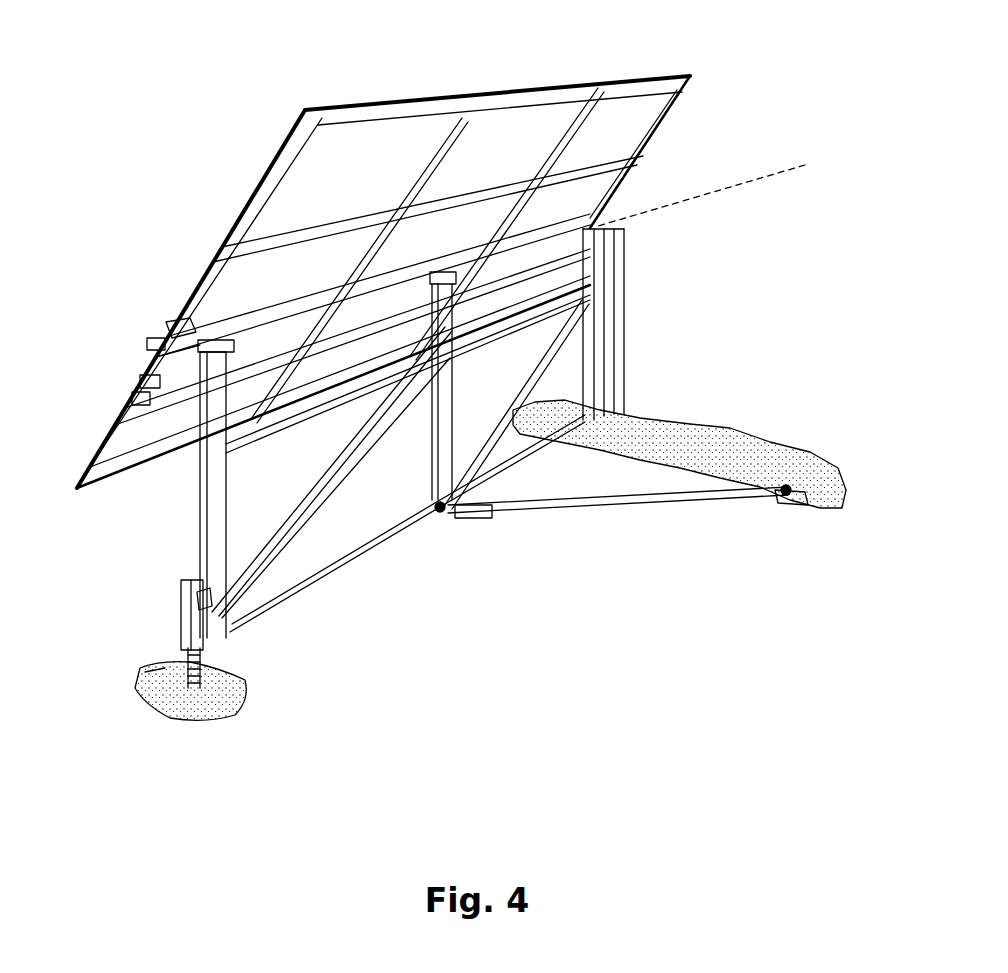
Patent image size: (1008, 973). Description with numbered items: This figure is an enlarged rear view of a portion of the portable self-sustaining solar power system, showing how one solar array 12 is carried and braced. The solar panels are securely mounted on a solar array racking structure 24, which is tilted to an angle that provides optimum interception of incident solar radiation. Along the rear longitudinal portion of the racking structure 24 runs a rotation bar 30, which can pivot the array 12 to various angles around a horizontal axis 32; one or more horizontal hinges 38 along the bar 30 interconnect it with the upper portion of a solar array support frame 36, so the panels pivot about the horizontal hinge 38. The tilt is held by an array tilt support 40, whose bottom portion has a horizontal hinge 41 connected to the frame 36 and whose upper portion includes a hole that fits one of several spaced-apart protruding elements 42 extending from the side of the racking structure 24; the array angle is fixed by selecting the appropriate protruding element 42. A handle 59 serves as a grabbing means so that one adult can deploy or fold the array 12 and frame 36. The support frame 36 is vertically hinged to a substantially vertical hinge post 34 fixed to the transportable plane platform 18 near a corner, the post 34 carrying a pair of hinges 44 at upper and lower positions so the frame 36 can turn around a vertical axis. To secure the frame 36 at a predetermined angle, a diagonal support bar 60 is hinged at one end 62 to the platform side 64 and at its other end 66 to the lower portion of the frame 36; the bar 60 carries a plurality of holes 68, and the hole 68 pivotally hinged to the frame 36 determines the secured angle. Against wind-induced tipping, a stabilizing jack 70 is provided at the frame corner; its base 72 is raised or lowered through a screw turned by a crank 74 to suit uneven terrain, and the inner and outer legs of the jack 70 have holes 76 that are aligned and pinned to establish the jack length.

The solar array 12 is at (392, 64).
The transportable plane platform 18 is at (650, 410).
The solar array racking structure 24 is at (470, 96).
The rotation bar 30 is at (300, 200).
The horizontal axis 32 is at (750, 180).
The hinge post 34 is at (620, 304).
The solar array support frame 36 is at (347, 567).
The horizontal hinge 38 is at (210, 270).
The array tilt support 40 is at (200, 410).
The horizontal hinge 41 is at (172, 395).
The protruding element 42 is at (147, 370).
The hinge 44 is at (620, 262).
The handle 59 is at (153, 337).
The diagonal support bar 60 is at (617, 513).
The end of diagonal support bar 62 is at (790, 482).
The platform side 64 is at (803, 500).
The end of diagonal support bar 66 is at (447, 517).
The hole 68 is at (482, 512).
The stabilizing jack 70 is at (185, 665).
The base 72 is at (160, 693).
The crank 74 is at (200, 640).
The hole 76 is at (140, 673).